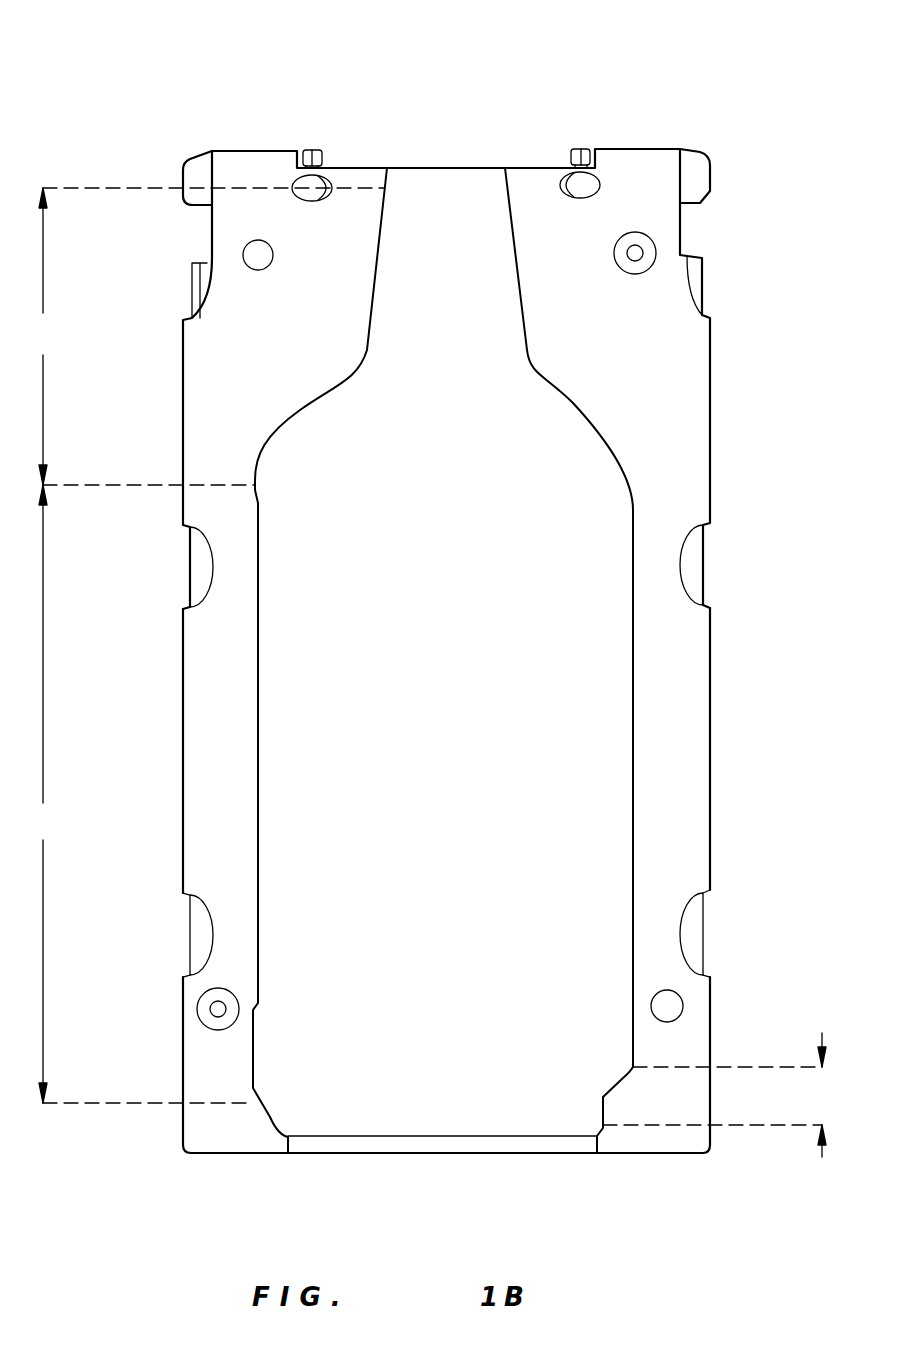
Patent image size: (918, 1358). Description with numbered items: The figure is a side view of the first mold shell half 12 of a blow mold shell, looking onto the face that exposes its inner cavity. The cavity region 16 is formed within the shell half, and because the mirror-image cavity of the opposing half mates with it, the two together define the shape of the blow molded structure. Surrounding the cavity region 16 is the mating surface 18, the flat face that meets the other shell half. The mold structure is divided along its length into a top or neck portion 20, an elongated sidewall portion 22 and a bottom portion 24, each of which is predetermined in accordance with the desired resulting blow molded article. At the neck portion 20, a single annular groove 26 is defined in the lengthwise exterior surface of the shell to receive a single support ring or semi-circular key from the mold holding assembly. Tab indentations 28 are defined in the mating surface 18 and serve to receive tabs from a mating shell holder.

The first mold shell half 12 is at (795, 155).
The cavity region 16 is at (500, 653).
The mating surface 18 is at (217, 763).
The neck portion 20 is at (206, 336).
The elongated sidewall portion 22 is at (140, 794).
The bottom portion 24 is at (718, 1095).
The single annular groove 26 is at (178, 227).
The tab indentations 28 is at (205, 567).